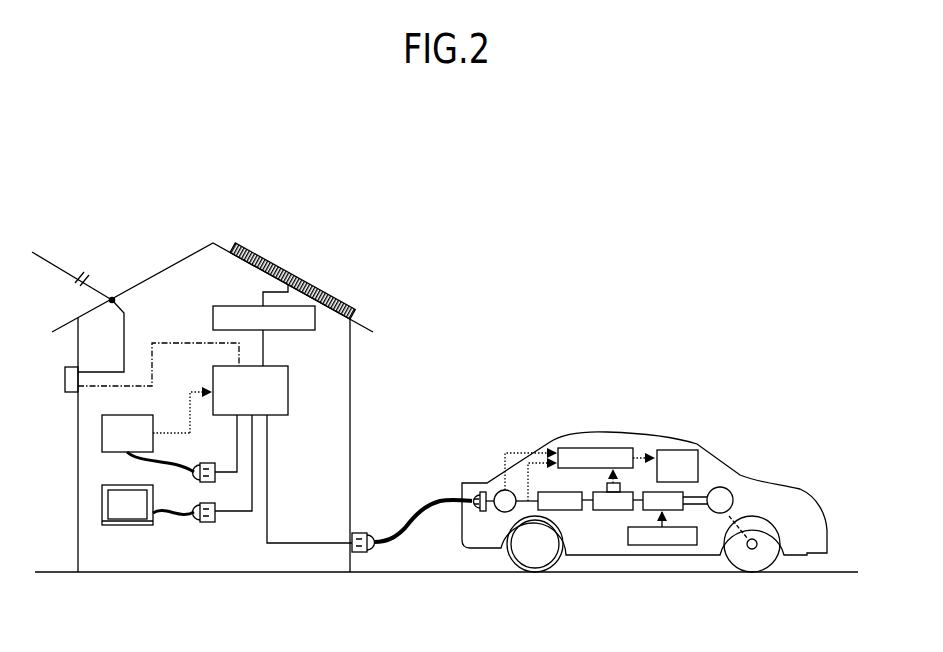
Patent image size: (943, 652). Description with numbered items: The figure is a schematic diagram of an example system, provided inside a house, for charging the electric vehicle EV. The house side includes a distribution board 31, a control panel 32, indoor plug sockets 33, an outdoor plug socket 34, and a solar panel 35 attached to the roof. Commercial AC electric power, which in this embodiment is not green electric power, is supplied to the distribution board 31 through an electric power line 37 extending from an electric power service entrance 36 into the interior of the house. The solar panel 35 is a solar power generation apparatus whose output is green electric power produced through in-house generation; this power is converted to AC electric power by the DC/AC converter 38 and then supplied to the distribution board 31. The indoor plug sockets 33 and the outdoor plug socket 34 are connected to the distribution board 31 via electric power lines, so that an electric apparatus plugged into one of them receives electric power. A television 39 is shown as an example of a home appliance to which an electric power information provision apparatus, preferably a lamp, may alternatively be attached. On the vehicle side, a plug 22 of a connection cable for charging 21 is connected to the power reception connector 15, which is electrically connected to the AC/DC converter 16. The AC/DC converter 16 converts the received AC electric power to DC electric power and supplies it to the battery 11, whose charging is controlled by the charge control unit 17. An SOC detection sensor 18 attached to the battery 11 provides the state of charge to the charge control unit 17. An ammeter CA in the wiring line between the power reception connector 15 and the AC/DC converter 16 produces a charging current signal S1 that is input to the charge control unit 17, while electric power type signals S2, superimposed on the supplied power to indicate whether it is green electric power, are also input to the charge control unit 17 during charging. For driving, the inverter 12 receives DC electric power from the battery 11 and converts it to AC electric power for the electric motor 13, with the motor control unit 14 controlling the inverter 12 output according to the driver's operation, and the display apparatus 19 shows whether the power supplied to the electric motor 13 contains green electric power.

The battery 11 is at (612, 511).
The inverter 12 is at (677, 511).
The electric motor 13 is at (733, 500).
The motor control unit 14 is at (662, 546).
The power reception connector 15 is at (483, 491).
The AC/DC converter 16 is at (573, 511).
The charge control unit 17 is at (597, 448).
The SOC detection sensor 18 is at (607, 487).
The display apparatus 19 is at (693, 450).
The connection cable for charging 21 is at (423, 500).
The plug 22 is at (465, 478).
The distribution board 31 is at (289, 391).
The control panel 32 is at (101, 434).
The indoor plug sockets 33 is at (208, 462).
The outdoor plug socket 34 is at (360, 532).
The solar panel 35 is at (266, 255).
The electric power service entrance 36 is at (112, 297).
The electric power line 37 is at (126, 327).
The DC/AC converter 38 is at (228, 306).
The television 39 is at (127, 528).
The charging current signal S1 is at (530, 460).
The electric power type signals S2 is at (542, 482).
The ammeter CA is at (502, 512).
The electric vehicle EV is at (557, 369).